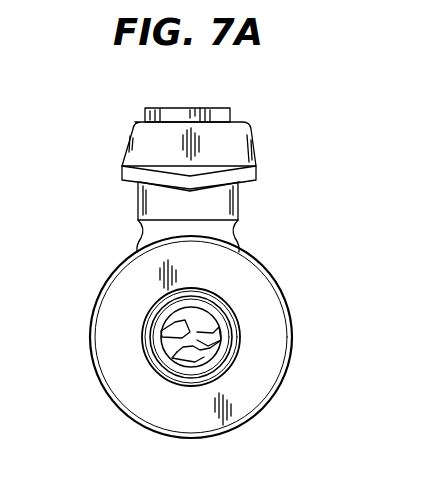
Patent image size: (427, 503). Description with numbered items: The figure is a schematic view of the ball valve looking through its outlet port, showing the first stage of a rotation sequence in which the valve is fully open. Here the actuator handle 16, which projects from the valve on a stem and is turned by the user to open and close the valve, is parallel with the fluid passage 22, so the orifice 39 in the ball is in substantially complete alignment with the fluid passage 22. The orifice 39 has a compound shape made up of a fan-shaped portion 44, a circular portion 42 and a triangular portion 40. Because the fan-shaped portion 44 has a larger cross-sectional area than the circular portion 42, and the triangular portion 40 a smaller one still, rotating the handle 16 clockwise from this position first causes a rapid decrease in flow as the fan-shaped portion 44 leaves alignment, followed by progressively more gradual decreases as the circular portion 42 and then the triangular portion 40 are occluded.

The actuator handle 16 is at (241, 149).
The fluid passage 22 is at (205, 321).
The orifice 39 is at (200, 360).
The triangular portion 40 is at (212, 343).
The circular portion 42 is at (183, 333).
The fan-shaped portion 44 is at (158, 347).